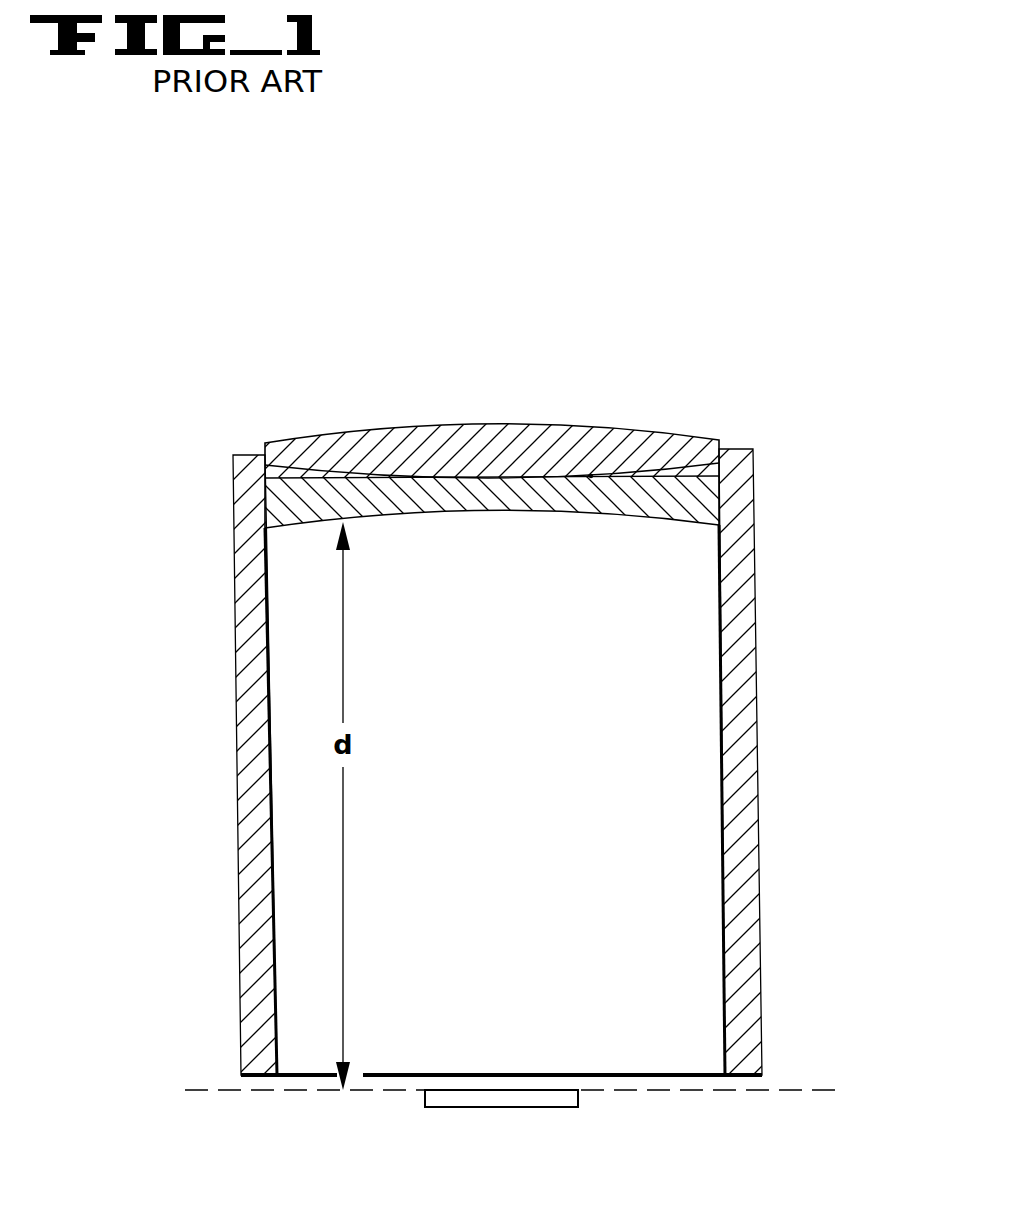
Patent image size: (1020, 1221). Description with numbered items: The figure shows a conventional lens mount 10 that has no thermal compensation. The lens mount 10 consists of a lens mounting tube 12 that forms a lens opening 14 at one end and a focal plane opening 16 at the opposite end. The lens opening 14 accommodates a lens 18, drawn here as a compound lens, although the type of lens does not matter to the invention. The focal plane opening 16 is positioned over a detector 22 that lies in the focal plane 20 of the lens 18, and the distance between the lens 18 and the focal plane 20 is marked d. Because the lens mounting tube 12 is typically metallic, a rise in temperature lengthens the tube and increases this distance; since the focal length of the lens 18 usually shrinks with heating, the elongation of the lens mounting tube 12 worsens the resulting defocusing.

The lens mount 10 is at (561, 733).
The lens mounting tube 12 is at (761, 880).
The lens opening 14 is at (335, 423).
The focal plane opening 16 is at (650, 1078).
The lens 18 is at (591, 476).
The focal plane 20 is at (270, 1092).
The detector 22 is at (472, 1092).